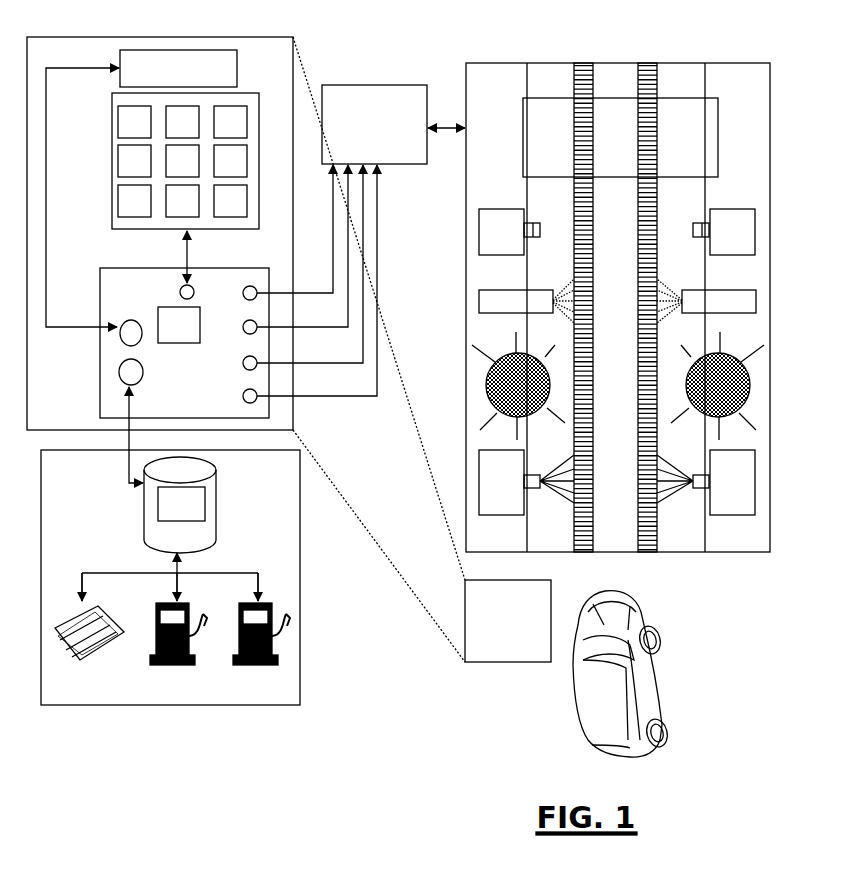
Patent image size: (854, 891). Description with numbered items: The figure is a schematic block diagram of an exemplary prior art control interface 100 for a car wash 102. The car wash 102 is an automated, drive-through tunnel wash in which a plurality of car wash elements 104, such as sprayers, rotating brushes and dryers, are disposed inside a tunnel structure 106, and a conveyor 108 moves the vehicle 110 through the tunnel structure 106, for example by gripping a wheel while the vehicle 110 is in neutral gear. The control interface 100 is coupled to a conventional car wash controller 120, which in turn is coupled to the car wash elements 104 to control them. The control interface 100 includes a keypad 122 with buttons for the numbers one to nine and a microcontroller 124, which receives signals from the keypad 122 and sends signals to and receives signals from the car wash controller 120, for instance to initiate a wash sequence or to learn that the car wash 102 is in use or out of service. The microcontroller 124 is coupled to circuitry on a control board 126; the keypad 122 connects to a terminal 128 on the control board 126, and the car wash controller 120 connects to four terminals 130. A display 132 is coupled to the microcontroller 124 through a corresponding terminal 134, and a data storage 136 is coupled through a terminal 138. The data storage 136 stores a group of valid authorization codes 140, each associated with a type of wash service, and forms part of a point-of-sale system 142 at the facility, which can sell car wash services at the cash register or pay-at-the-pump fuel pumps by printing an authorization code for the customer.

The control interface 100 is at (492, 616).
The car wash 102 is at (461, 61).
The car wash elements 104 is at (477, 447).
The tunnel structure 106 is at (731, 88).
The conveyor 108 is at (583, 62).
The vehicle 110 is at (583, 713).
The car wash controller 120 is at (360, 155).
The keypad 122 is at (106, 162).
The microcontroller 124 is at (165, 336).
The control board 126 is at (174, 411).
The terminal 128 is at (180, 292).
The terminals 130 is at (245, 300).
The display 132 is at (227, 78).
The terminal 134 is at (126, 336).
The data storage 136 is at (163, 546).
The terminal 138 is at (126, 372).
The valid authorization codes 140 is at (167, 513).
The point-of-sale system 142 is at (59, 691).